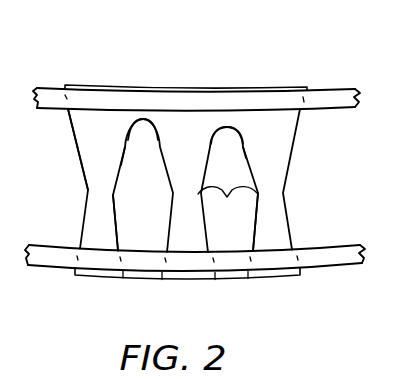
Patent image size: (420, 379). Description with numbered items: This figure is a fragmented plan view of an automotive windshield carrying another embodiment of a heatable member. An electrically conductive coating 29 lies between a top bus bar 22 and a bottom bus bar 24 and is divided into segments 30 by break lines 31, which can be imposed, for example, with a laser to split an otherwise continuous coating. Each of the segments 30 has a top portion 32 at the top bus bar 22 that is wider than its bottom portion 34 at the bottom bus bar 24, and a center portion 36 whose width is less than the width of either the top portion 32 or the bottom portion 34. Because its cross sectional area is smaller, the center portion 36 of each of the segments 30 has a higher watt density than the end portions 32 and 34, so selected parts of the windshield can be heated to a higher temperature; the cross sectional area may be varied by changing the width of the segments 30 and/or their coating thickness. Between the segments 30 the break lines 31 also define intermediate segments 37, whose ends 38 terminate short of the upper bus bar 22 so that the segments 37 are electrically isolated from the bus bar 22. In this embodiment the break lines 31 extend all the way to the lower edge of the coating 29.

The top bus bar 22 is at (47, 88).
The bottom bus bar 24 is at (43, 267).
The electrically conductive coating 29 is at (318, 132).
The segments 30 is at (164, 206).
The break lines 31 is at (245, 145).
The top portion 32 is at (118, 86).
The bottom portion 34 is at (98, 277).
The center portion 36 is at (88, 193).
The segments between the segments 37 is at (128, 158).
The ends 38 is at (157, 147).